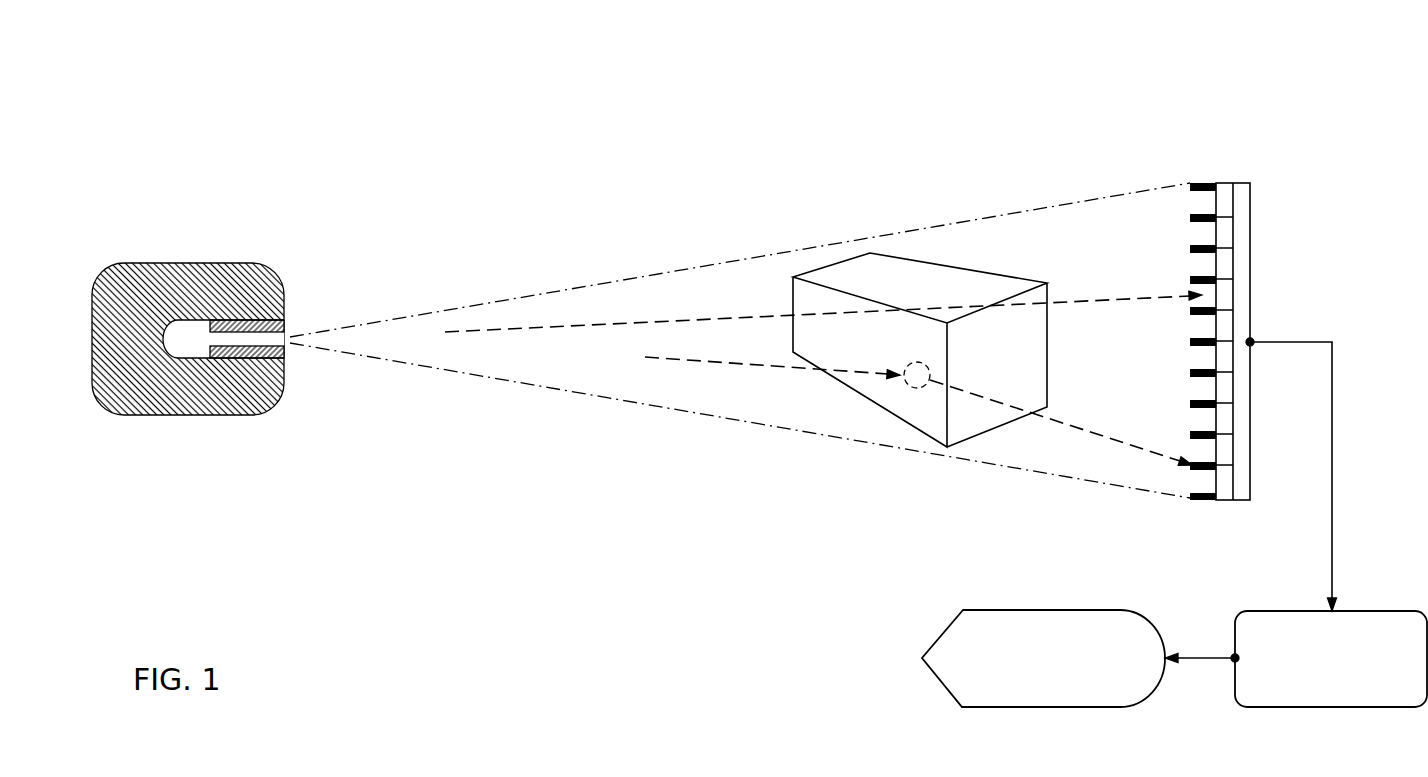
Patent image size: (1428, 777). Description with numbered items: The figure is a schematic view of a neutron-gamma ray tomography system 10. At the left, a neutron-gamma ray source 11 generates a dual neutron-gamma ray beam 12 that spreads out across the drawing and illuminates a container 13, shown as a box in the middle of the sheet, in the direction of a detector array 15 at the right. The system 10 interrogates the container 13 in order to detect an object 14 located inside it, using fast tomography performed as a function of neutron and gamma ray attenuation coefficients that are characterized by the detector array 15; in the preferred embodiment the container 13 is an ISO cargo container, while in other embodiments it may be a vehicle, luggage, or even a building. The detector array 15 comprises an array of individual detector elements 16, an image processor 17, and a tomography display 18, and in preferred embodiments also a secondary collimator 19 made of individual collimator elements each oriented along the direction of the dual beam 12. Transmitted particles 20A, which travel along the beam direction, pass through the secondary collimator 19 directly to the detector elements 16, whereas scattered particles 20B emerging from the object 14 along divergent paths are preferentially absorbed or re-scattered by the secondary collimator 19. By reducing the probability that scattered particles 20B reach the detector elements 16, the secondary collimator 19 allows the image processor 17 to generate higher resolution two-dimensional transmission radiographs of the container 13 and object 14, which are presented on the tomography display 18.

The neutron-gamma ray tomography system 10 is at (475, 67).
The neutron-gamma ray source 11 is at (300, 262).
The dual neutron-gamma ray beam 12 is at (548, 270).
The container 13 is at (916, 277).
The object 14 is at (918, 388).
The detector array 15 is at (1268, 160).
The detector element 16 is at (1228, 293).
The image processor 17 is at (1235, 630).
The tomography display 18 is at (945, 630).
The secondary collimator 19 is at (1208, 168).
The transmitted particles 20A is at (823, 298).
The scattered particles 20B is at (918, 411).